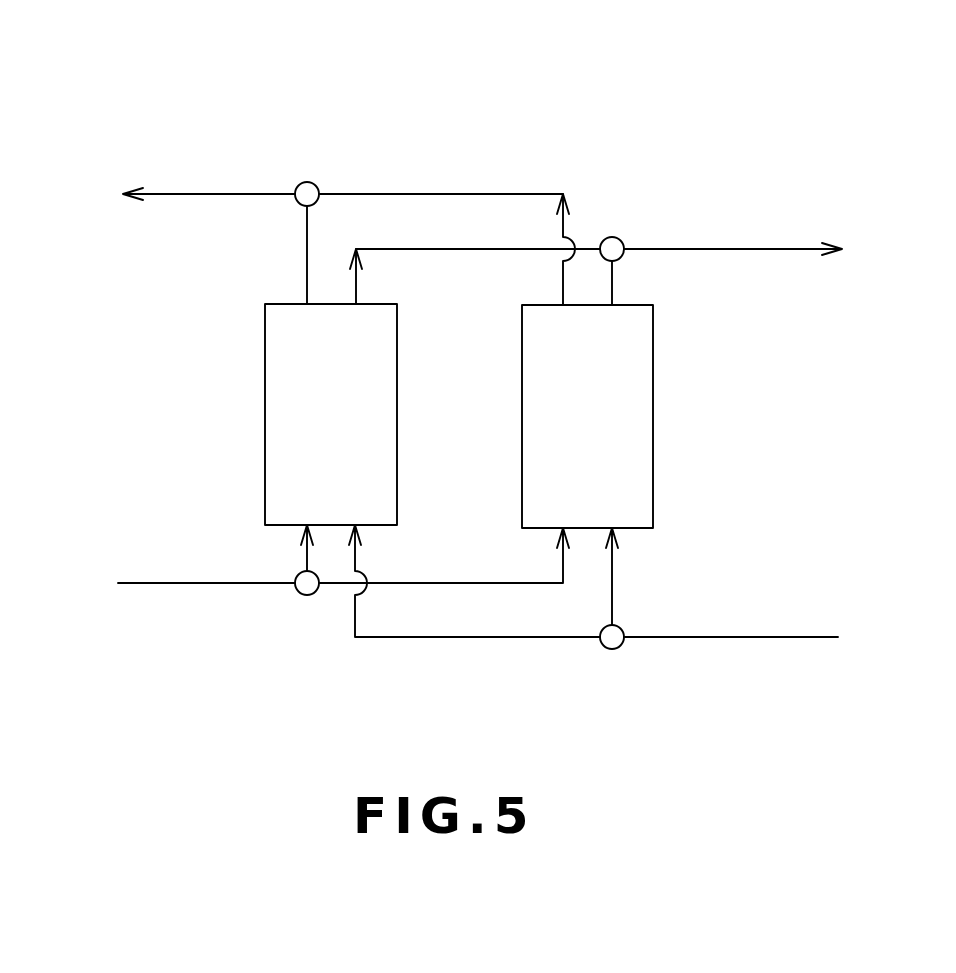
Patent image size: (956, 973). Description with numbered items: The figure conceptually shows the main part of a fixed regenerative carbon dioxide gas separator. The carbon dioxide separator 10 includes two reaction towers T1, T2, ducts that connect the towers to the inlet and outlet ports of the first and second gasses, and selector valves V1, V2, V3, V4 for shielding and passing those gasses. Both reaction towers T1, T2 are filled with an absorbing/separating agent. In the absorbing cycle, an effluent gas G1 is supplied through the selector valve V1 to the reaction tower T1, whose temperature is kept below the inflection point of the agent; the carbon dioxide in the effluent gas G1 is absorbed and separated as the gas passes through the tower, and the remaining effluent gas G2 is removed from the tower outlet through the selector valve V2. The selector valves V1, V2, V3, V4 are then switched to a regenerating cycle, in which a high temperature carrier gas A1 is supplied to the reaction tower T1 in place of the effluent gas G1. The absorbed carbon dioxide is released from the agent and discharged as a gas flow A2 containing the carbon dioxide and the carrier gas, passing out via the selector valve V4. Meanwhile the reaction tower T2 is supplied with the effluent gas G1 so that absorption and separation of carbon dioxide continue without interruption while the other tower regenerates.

The carbon dioxide separator 10 is at (512, 147).
The reaction tower T1 is at (331, 414).
The reaction tower T2 is at (587, 416).
The selector valve V1 is at (306, 582).
The selector valve V2 is at (306, 221).
The selector valve V3 is at (609, 611).
The selector valve V4 is at (616, 249).
The effluent gas G1 is at (197, 611).
The effluent gas G2 is at (200, 170).
The high temperature carrier gas A1 is at (731, 614).
The gas flow A2 is at (733, 229).